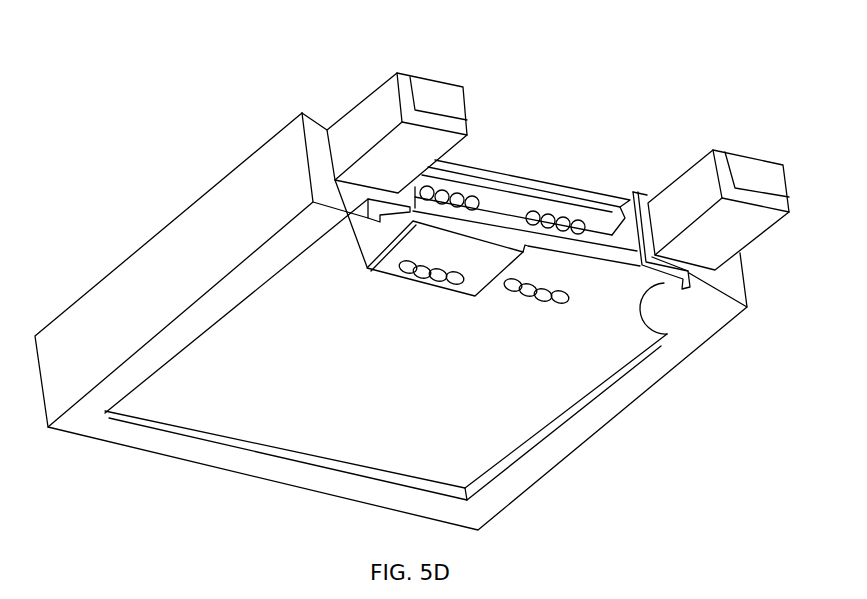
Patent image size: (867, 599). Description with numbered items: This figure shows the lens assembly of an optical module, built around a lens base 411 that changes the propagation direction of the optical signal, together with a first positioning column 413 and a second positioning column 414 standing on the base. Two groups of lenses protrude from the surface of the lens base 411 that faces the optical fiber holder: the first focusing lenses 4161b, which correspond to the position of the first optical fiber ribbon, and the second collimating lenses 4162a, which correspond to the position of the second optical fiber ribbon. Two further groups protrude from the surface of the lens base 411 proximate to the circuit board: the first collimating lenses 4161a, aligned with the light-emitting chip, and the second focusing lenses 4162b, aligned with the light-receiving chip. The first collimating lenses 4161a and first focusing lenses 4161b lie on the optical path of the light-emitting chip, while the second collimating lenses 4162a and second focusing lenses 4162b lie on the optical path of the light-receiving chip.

The lens base 411 is at (212, 220).
The first positioning column 413 is at (762, 168).
The second positioning column 414 is at (382, 117).
The first collimating lenses 4161a is at (460, 281).
The first focusing lenses 4161b is at (475, 203).
The second collimating lenses 4162a is at (580, 230).
The second focusing lenses 4162b is at (565, 299).